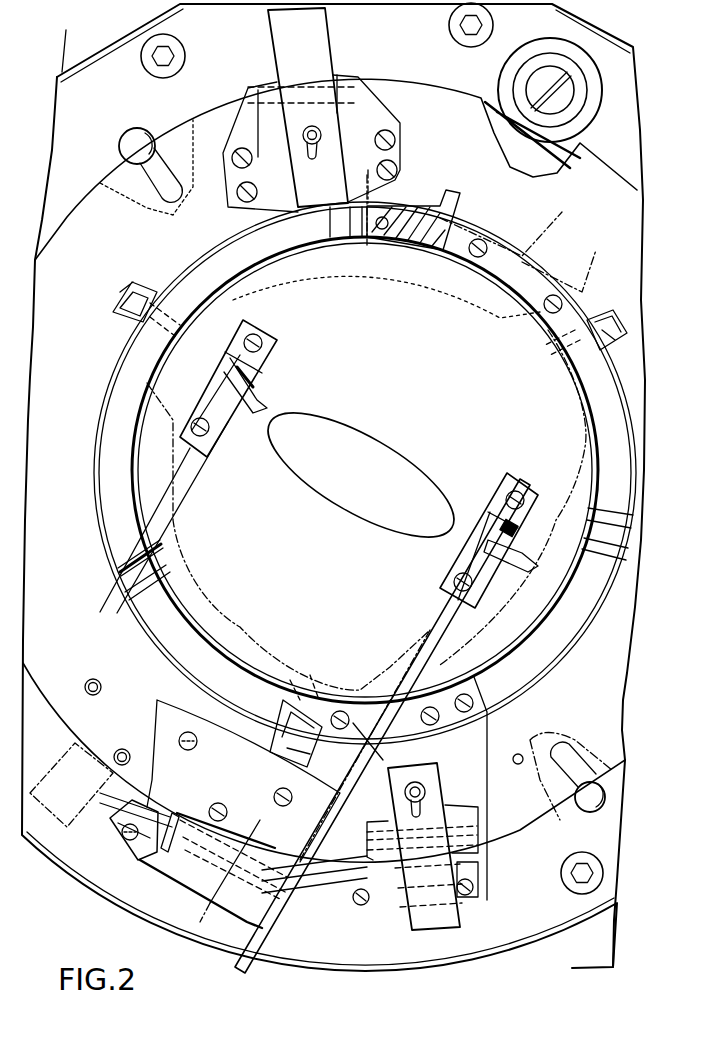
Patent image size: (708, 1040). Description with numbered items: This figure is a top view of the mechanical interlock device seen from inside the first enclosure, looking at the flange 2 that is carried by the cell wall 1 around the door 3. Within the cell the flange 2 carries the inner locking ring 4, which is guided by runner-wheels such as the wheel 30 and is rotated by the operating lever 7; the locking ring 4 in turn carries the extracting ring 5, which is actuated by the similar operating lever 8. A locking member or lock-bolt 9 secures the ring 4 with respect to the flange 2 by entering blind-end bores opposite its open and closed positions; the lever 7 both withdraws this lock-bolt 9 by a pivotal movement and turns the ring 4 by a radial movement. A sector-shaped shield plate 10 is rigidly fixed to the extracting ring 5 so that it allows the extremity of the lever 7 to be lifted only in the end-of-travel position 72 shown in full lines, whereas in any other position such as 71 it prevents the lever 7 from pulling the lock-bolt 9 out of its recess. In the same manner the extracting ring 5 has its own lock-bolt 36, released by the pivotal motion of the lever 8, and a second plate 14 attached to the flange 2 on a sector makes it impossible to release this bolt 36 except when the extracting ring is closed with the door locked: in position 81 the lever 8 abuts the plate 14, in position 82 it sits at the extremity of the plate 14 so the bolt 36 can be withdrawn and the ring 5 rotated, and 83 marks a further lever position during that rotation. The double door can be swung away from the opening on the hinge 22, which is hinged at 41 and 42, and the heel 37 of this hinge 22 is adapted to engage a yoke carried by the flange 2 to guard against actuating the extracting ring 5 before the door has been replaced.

The wall 1 is at (600, 962).
The flange 2 is at (600, 37).
The door 3 is at (492, 421).
The inner locking ring 4 is at (432, 98).
The extracting ring 5 is at (590, 396).
The operating lever 7 is at (300, 50).
The operating lever 8 is at (420, 925).
The locking member (lock-bolt) 9 is at (298, 135).
The shield plate 10 is at (437, 180).
The second plate 14 is at (332, 898).
The hinge 22 is at (428, 632).
The runner-wheel 30 is at (580, 123).
The lock-bolt 36 is at (425, 797).
The heel 37 is at (382, 739).
The hinge pivot 41 is at (262, 410).
The hinge pivot 42 is at (262, 893).
The lever position 7-1 71 is at (230, 28).
The lever position 7-2 72 is at (584, 221).
The lever position 8-1 81 is at (446, 988).
The lever position 8-2 82 is at (71, 785).
The lever position 8-3 83 is at (526, 905).